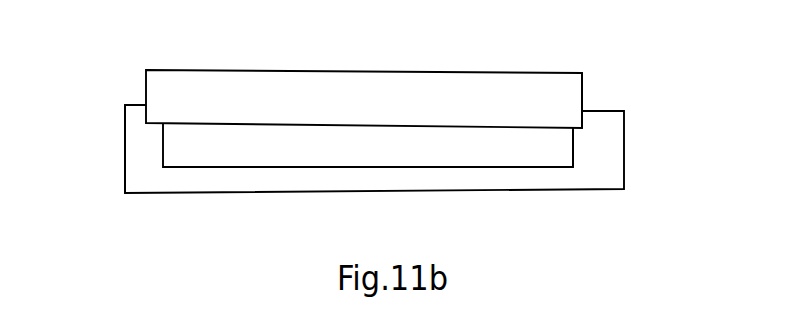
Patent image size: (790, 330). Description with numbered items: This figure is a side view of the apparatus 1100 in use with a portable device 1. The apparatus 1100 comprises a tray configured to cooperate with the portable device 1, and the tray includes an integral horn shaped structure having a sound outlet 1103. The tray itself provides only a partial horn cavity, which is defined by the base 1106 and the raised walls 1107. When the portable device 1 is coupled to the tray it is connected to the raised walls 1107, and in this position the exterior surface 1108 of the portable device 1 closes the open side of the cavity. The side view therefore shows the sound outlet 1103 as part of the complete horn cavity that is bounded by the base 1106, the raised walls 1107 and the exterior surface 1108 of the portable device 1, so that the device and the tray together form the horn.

The portable device 1 is at (584, 89).
The apparatus 1100 is at (115, 178).
The sound outlet 1103 is at (517, 150).
The base 1106 is at (323, 167).
The raised walls 1107 is at (152, 137).
The exterior surface 1108 is at (362, 125).